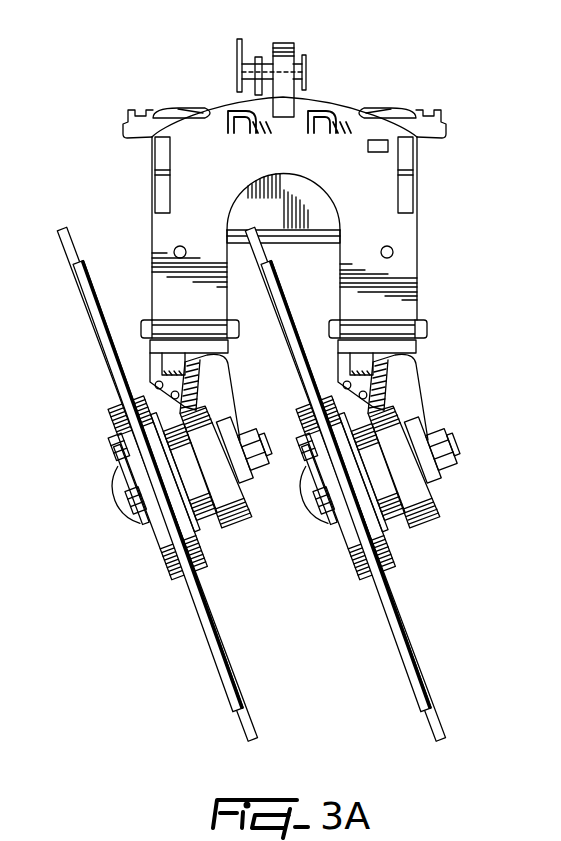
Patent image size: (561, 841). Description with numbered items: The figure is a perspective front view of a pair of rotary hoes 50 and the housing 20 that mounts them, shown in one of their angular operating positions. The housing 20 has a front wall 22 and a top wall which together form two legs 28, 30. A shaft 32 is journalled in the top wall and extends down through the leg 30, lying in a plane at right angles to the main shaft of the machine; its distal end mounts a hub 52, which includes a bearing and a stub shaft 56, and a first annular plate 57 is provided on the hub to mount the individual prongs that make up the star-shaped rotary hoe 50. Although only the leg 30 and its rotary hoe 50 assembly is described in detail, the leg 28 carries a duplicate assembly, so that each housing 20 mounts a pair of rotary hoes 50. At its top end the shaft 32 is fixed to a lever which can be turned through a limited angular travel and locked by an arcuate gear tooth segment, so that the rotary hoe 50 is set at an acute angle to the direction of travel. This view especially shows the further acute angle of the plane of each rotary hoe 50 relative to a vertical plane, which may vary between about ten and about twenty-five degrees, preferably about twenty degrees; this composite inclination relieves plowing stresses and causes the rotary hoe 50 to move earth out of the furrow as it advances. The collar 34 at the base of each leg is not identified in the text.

The housing 20 is at (430, 256).
The front wall 22 is at (385, 222).
The leg 28 is at (172, 288).
The leg 30 is at (407, 306).
The shaft 32 is at (358, 362).
The mounting collar 34 is at (168, 348).
The rotary hoe 50 is at (181, 618).
The hub 52 is at (458, 514).
The stub shaft 56 is at (318, 513).
The first annular plate 57 is at (377, 540).